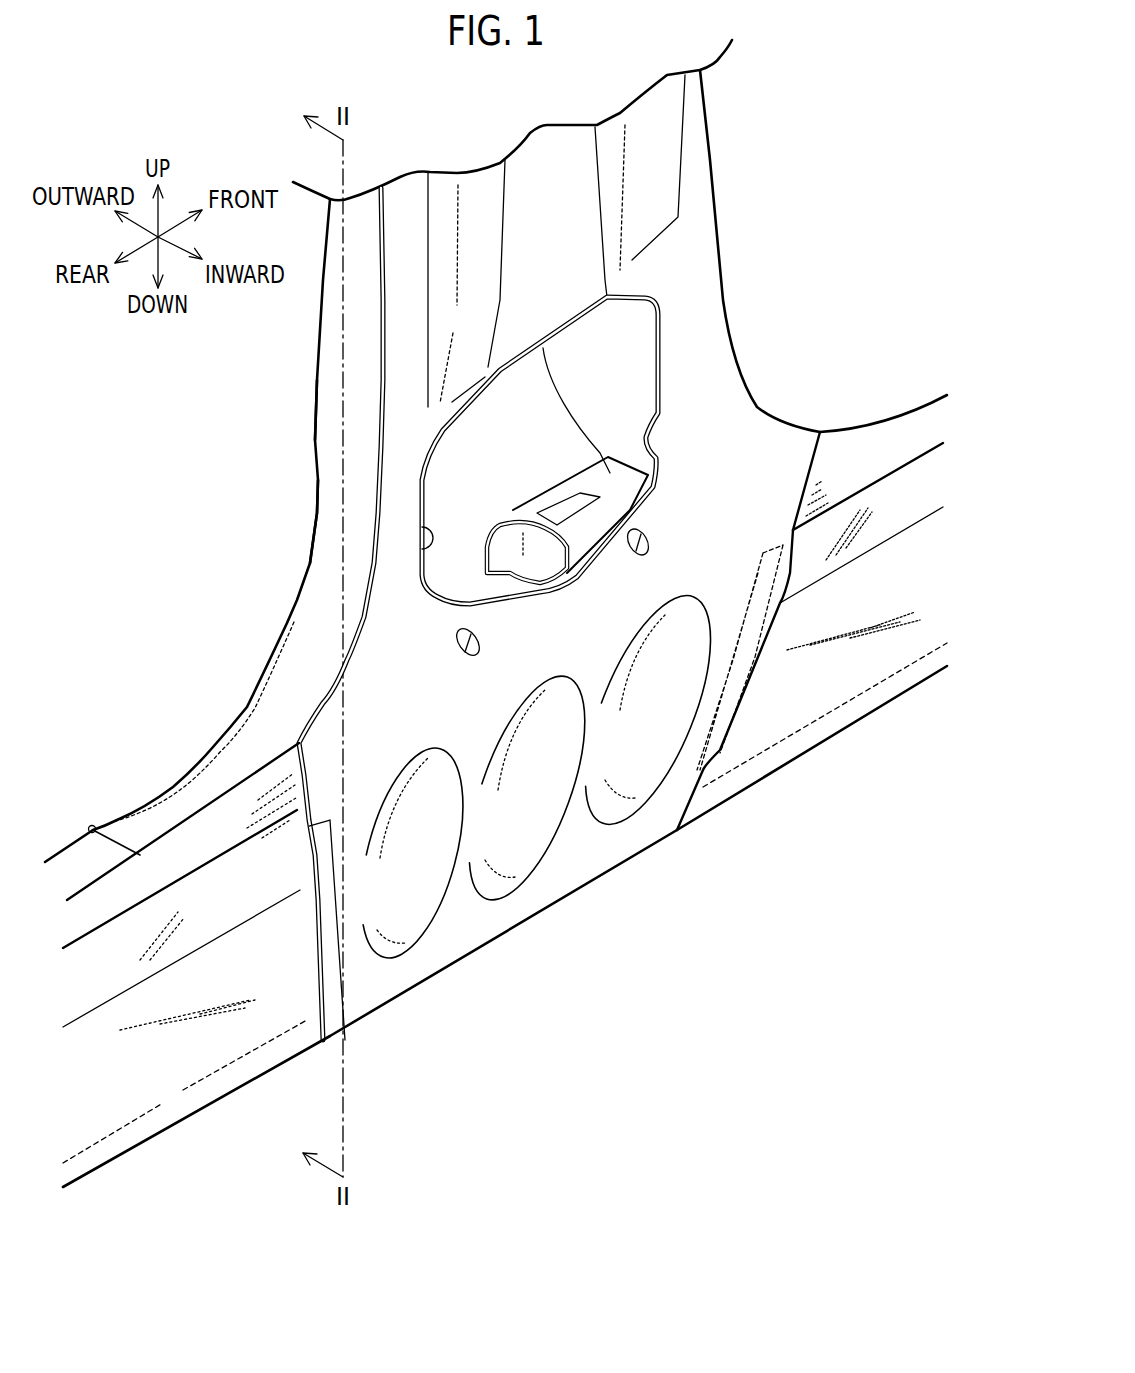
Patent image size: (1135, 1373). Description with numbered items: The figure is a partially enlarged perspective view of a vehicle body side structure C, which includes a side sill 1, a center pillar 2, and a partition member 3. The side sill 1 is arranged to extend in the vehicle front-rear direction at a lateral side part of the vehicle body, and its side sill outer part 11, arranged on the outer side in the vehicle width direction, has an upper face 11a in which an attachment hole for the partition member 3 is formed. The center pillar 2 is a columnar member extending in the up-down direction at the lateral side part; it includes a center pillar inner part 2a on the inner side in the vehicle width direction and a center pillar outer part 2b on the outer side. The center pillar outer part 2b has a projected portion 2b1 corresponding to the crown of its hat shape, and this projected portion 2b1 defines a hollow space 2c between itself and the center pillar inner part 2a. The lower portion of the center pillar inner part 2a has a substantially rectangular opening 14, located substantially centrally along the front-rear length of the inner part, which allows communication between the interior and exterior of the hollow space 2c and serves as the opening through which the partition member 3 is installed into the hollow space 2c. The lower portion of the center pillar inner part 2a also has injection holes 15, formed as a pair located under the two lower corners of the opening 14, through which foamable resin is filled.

The vehicle body side structure C is at (802, 106).
The side sill 1 is at (57, 862).
The side sill outer part 11 is at (496, 815).
The upper face 11a is at (73, 862).
The center pillar 2 is at (711, 163).
The center pillar inner part 2a is at (748, 458).
The center pillar outer part 2b is at (320, 497).
The projected portion 2b1 is at (330, 396).
The hollow space 2c is at (619, 387).
The partition member 3 is at (613, 453).
The opening 14 is at (420, 555).
The injection holes 15 is at (633, 549).